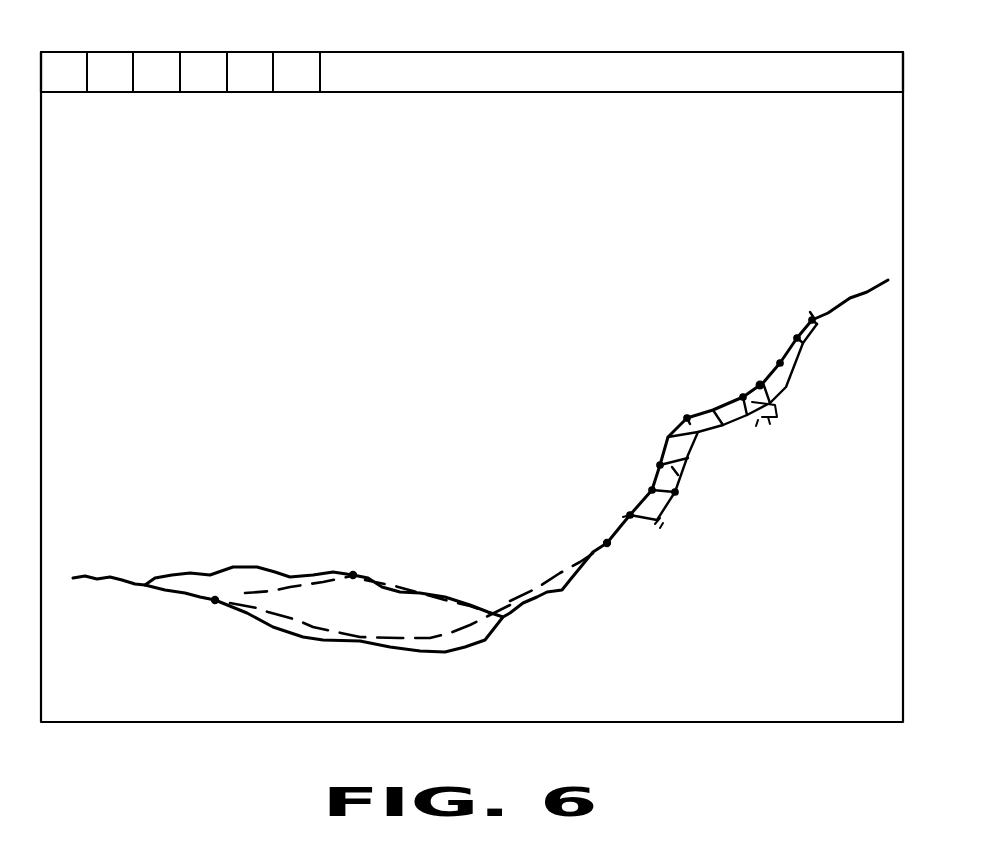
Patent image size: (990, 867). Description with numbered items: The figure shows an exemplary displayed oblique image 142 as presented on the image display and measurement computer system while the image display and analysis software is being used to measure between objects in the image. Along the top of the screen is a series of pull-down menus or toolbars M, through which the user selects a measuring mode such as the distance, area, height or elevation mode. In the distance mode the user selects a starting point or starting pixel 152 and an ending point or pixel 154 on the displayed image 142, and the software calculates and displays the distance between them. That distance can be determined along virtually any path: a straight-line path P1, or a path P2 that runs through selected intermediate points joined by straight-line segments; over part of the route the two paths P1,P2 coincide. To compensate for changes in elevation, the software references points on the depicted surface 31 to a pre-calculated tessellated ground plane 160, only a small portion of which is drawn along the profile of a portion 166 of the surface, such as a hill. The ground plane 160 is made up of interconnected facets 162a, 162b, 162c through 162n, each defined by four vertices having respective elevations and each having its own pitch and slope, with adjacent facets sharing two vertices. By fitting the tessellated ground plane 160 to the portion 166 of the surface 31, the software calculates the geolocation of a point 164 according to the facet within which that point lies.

The pull-down menus or toolbars M is at (883, 80).
The surface 31 is at (101, 577).
The displayed oblique image 142 is at (826, 675).
The starting point or starting pixel 152 is at (215, 602).
The ending point or pixel 154 is at (609, 545).
The tessellated ground plane 160 is at (666, 426).
The facet 162a is at (640, 504).
The facet 162b is at (660, 475).
The facet 162c is at (668, 440).
The facet 162n is at (802, 330).
The point 164 is at (710, 427).
The portion of surface 166 is at (758, 385).
The straight-line path P1 is at (323, 632).
The path P2 is at (258, 592).
The paths P1,P2 is at (523, 602).